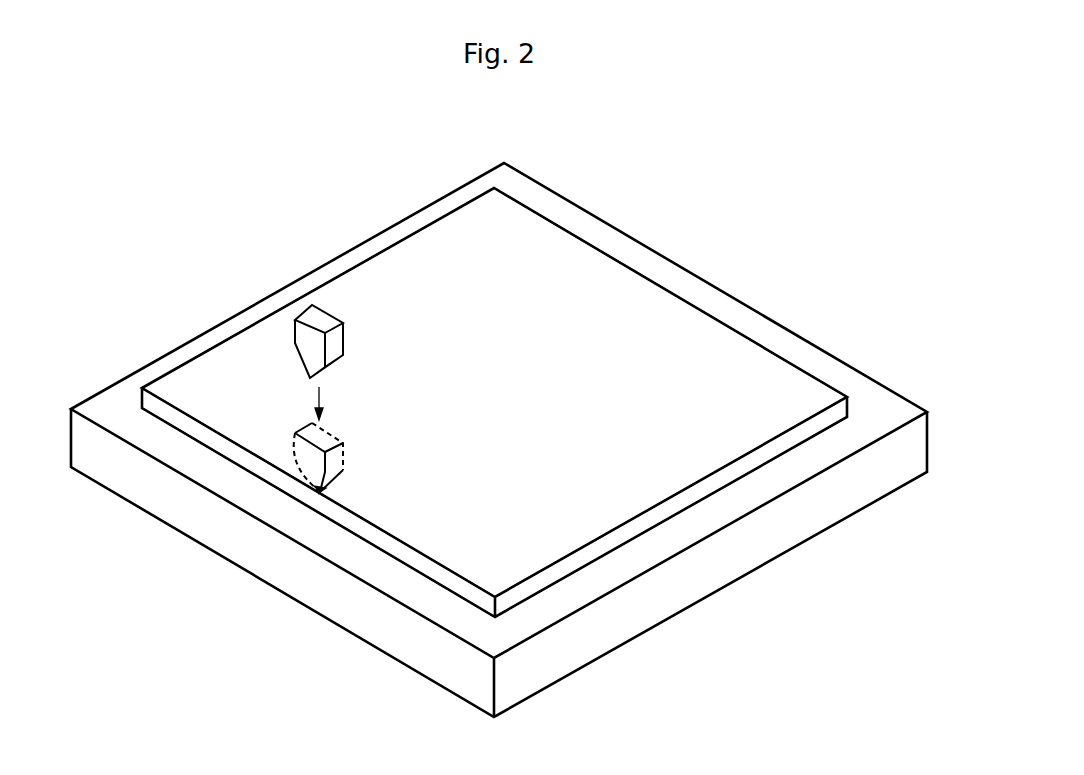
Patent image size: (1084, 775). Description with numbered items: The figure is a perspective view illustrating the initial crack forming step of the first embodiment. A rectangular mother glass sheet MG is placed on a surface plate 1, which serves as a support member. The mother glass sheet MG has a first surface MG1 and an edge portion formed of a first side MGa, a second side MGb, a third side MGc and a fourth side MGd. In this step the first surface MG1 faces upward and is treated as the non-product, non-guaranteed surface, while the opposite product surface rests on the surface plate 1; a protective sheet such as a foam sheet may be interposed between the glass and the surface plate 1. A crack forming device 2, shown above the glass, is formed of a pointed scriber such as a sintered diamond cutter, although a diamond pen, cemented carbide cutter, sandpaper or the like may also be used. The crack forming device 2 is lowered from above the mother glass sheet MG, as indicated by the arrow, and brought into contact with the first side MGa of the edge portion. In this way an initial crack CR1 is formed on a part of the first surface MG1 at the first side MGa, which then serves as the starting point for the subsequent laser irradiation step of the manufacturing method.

The surface plate 1 is at (763, 533).
The mother glass sheet MG is at (742, 330).
The first surface MG1 is at (397, 273).
The first side MGa is at (245, 450).
The second side MGb is at (600, 537).
The third side MGc is at (538, 212).
The fourth side MGd is at (215, 345).
The crack forming device 2 is at (303, 335).
The initial crack CR1 is at (321, 492).